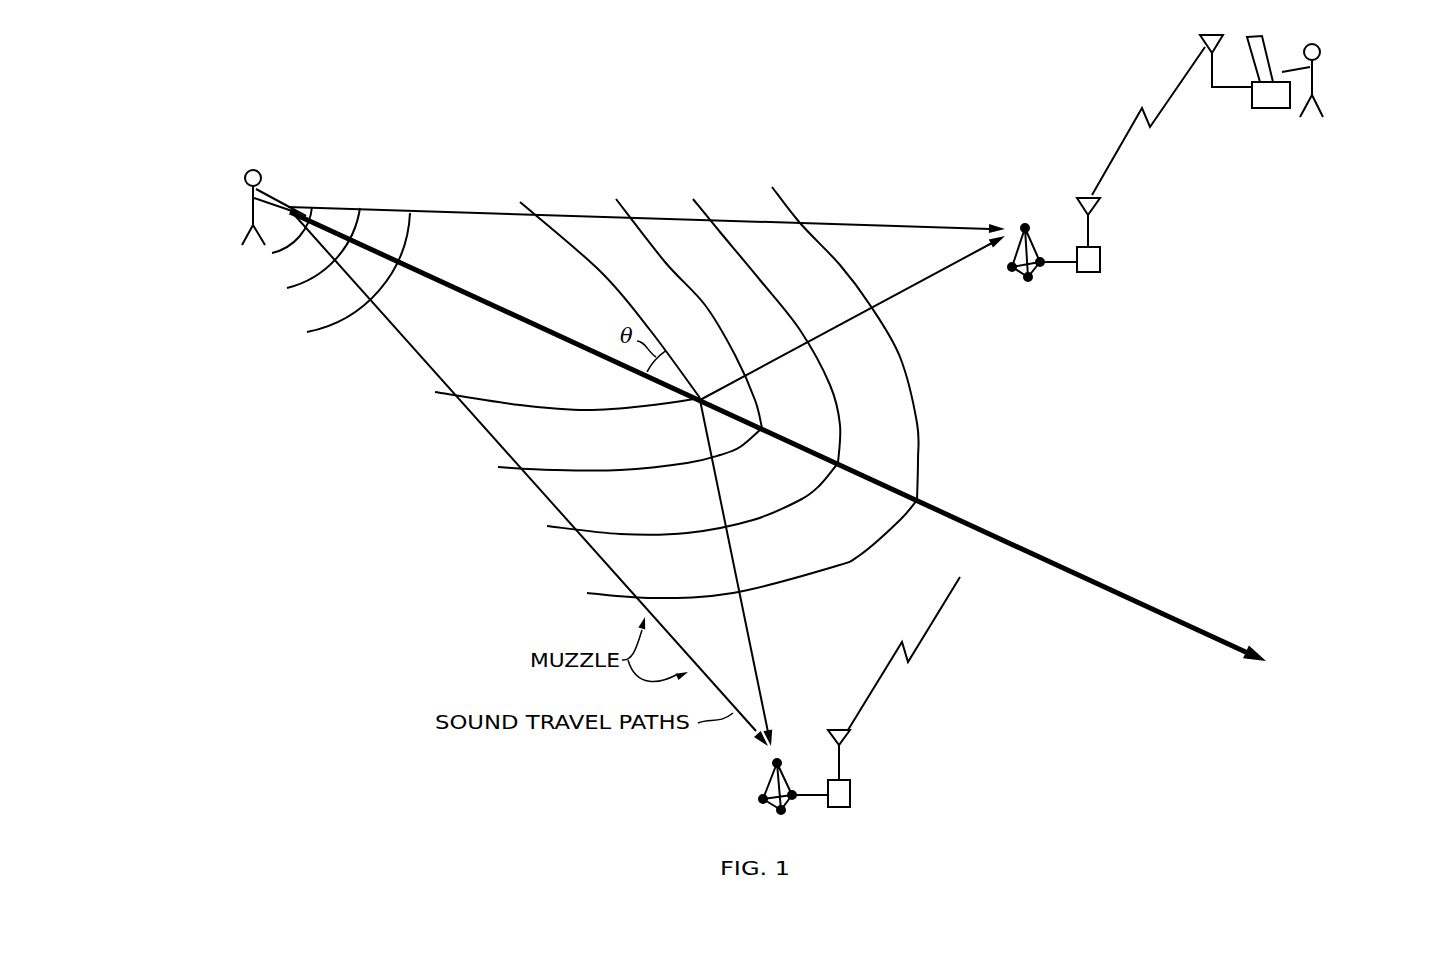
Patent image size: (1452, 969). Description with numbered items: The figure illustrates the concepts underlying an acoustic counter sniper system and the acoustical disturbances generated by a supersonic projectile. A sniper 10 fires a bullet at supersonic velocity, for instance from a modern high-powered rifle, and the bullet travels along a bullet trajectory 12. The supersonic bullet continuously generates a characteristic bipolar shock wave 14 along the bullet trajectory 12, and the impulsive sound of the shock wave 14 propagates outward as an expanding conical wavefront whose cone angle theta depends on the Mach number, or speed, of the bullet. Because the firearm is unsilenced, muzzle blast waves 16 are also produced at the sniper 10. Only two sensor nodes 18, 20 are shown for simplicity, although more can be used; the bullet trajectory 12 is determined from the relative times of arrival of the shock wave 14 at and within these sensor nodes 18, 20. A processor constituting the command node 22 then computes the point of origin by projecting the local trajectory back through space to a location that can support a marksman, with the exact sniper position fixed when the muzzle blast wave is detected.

The sniper 10 is at (206, 211).
The bullet trajectory 12 is at (1255, 600).
The shock wave 14 is at (768, 187).
The muzzle blast waves 16 is at (306, 339).
The sensor node 18 is at (797, 648).
The sensor node 20 is at (1224, 310).
The command node 22 is at (1363, 206).